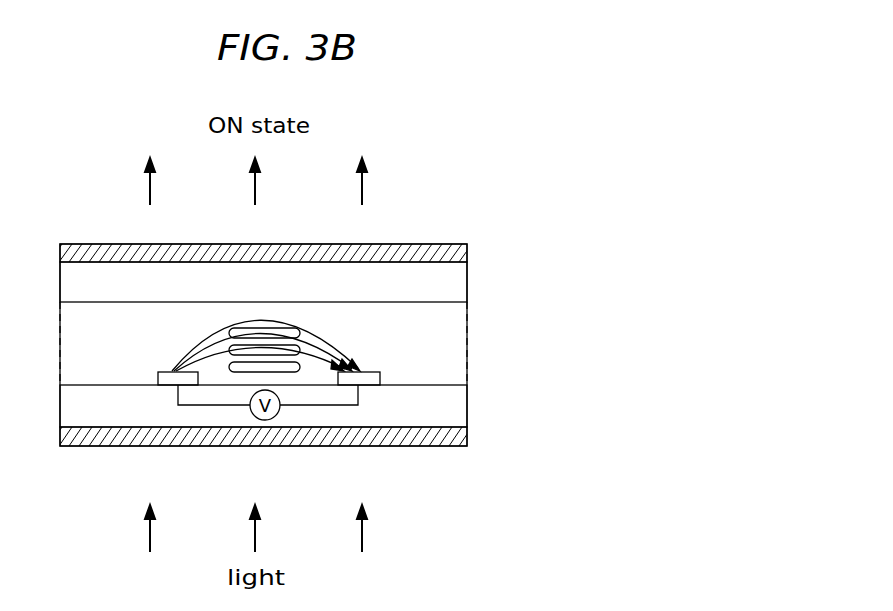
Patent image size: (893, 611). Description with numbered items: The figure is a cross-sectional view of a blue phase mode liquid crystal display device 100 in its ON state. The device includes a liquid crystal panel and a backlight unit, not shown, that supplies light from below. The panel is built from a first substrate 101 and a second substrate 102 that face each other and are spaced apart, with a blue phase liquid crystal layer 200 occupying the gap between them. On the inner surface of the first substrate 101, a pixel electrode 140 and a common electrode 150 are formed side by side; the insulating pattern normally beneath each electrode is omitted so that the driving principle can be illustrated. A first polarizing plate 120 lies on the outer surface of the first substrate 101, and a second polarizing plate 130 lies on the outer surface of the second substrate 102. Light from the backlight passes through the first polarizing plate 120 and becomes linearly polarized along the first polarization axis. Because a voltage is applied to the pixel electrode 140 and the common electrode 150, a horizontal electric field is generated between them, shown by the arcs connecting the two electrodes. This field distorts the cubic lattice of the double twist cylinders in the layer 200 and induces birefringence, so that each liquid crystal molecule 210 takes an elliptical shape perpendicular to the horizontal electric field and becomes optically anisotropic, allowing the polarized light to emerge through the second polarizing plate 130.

The blue phase mode liquid crystal display device 100 is at (448, 189).
The second polarizing plate 130 is at (467, 253).
The second substrate 102 is at (463, 291).
The blue phase liquid crystal layer 200 is at (465, 365).
The first substrate 101 is at (463, 401).
The first polarizing plate 120 is at (465, 440).
The pixel electrode 140 is at (180, 378).
The common electrode 150 is at (357, 380).
The liquid crystal molecule 210 is at (303, 333).